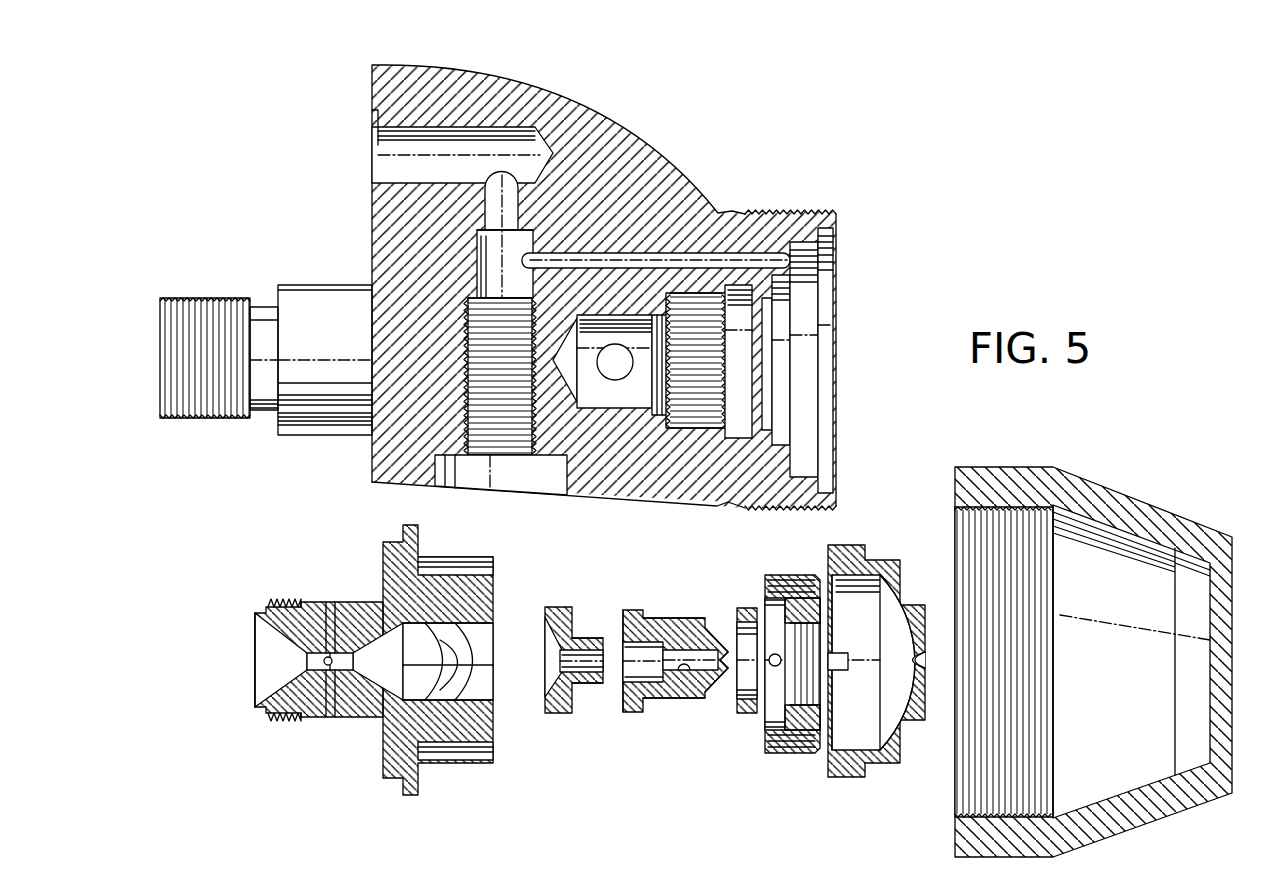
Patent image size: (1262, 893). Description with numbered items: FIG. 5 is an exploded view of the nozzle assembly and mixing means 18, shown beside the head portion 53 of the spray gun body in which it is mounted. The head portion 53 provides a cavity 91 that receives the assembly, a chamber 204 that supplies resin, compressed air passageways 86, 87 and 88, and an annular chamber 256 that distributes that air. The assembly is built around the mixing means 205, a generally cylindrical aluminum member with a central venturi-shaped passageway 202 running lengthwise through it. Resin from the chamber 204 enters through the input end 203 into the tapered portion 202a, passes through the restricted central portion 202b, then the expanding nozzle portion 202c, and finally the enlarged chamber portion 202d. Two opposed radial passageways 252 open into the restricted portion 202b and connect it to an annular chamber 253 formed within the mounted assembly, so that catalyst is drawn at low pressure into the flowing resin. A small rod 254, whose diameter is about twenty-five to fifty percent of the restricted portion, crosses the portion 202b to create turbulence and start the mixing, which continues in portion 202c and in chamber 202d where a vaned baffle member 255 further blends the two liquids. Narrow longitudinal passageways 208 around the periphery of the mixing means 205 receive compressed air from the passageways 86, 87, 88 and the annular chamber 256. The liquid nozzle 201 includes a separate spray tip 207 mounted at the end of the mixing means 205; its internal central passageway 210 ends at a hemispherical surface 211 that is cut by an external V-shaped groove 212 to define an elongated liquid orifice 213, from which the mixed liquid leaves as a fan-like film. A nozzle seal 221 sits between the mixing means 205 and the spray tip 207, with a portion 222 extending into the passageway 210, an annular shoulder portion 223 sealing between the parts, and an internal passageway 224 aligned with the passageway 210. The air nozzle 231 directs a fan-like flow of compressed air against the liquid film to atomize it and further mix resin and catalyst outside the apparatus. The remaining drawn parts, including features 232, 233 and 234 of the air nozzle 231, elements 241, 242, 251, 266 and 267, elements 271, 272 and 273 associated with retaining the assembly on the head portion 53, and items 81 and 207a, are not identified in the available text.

The nozzle assembly and mixing means 18 is at (285, 510).
The head portion 53 is at (622, 142).
The valve screw 81 is at (606, 350).
The passageway 86 is at (395, 166).
The passageway 87 is at (512, 205).
The passageway 88 is at (622, 266).
The cavity 91 is at (700, 300).
The liquid nozzle 201 is at (670, 748).
The central venturi-shaped passageway 202 is at (272, 676).
The tapered portion 202a is at (270, 640).
The central portion of restricted diameter 202b is at (343, 663).
The expanding nozzle portion 202c is at (340, 650).
The enlarged chamber portion 202d is at (495, 697).
The input end 203 is at (250, 656).
The chamber 204 is at (606, 398).
The mixing means 205 is at (357, 768).
The liquid spray tip portion 207 is at (655, 617).
The flange 207a is at (635, 714).
The longitudinal passageways 208 is at (470, 568).
The internal central passageway 210 is at (682, 668).
The hemispherical surface 211 is at (712, 650).
The V-shaped groove 212 is at (730, 652).
The liquid orifice 213 is at (728, 670).
The nozzle seal 221 is at (557, 716).
The portion 222 is at (588, 685).
The annular shoulder portion 223 is at (560, 610).
The internal passageway 224 is at (592, 650).
The air nozzle 231 is at (885, 770).
The spherical seat 232 is at (896, 612).
The orifice 233 is at (915, 658).
The seat 234 is at (915, 668).
The cup 241 is at (768, 582).
The thread 242 is at (790, 588).
The ring 251 is at (742, 610).
The radial passageways 252 is at (328, 615).
The annular chamber 253 is at (800, 320).
The small rod 254 is at (330, 657).
The baffle member 255 is at (482, 645).
The annular chamber 256 is at (808, 268).
The hole 266 is at (775, 666).
The slot 267 is at (838, 665).
The cap 271 is at (1060, 472).
The internal thread 272 is at (958, 512).
The external thread 273 is at (780, 210).